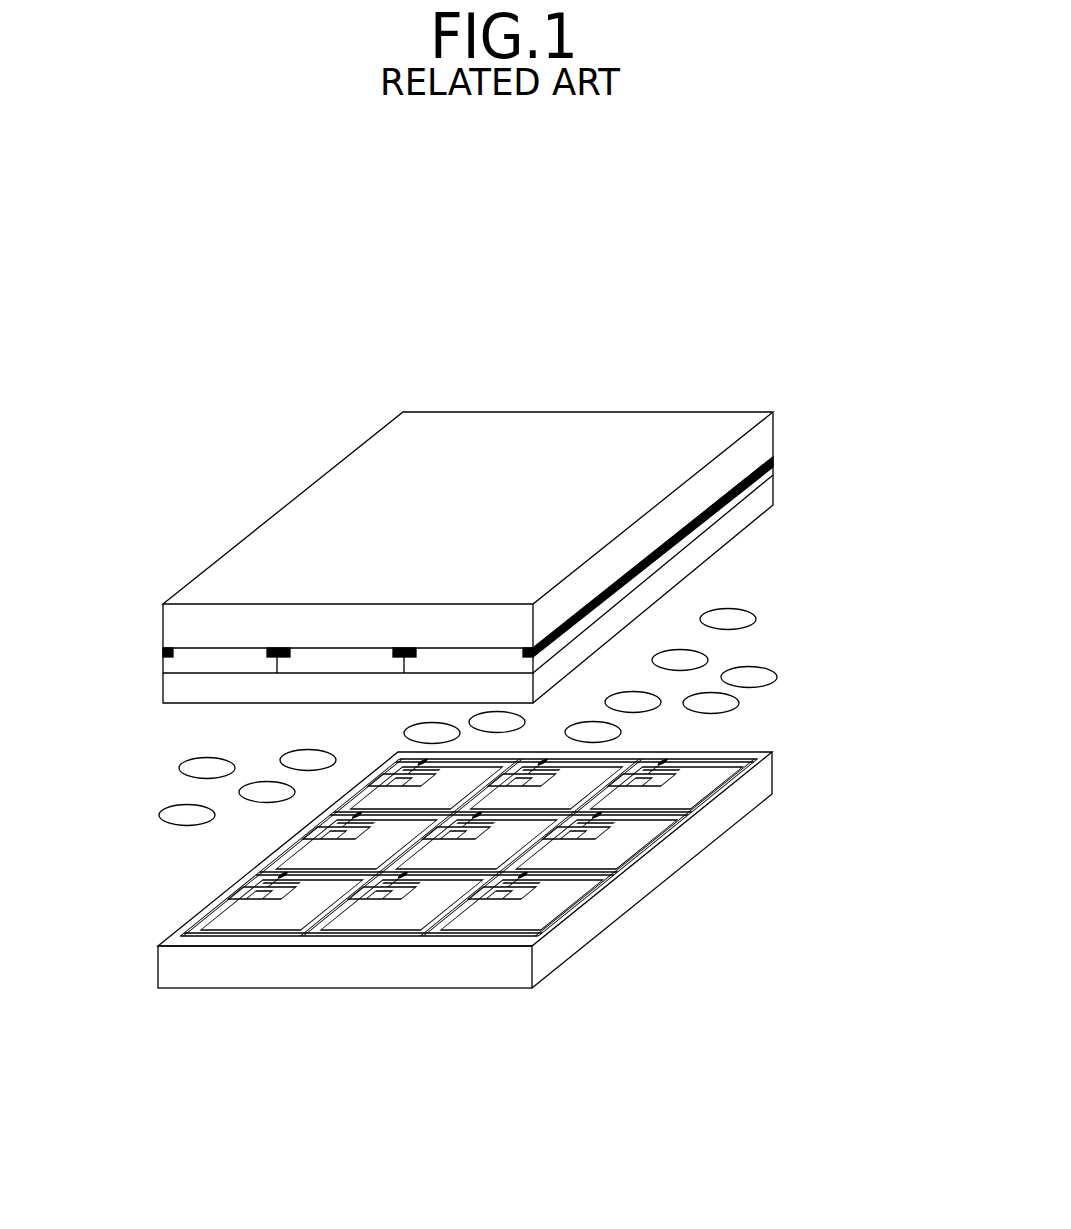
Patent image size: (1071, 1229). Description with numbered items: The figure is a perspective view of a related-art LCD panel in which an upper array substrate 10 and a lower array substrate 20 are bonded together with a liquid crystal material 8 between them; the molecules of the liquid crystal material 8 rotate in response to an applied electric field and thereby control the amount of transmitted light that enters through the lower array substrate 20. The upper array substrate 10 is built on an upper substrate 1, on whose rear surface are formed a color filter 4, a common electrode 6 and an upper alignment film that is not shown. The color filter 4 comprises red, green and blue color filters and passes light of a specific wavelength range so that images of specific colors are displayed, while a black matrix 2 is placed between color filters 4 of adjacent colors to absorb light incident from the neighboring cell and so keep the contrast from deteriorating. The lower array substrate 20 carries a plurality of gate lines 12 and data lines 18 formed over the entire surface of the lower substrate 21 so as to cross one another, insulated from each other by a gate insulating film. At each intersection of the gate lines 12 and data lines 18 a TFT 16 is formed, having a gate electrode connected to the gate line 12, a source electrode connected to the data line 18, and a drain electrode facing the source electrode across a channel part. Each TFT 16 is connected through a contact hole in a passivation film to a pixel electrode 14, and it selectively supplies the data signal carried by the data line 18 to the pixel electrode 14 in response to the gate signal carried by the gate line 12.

The upper substrate 1 is at (769, 440).
The black matrix 2 is at (163, 652).
The color filter 4 is at (770, 470).
The common electrode 6 is at (770, 500).
The liquid crystal material 8 is at (752, 620).
The upper array substrate 10 is at (514, 528).
The gate line 12 is at (740, 757).
The pixel electrode 14 is at (540, 900).
The TFT 16 is at (505, 895).
The data line 18 is at (205, 905).
The lower array substrate 20 is at (516, 931).
The lower substrate 21 is at (758, 790).